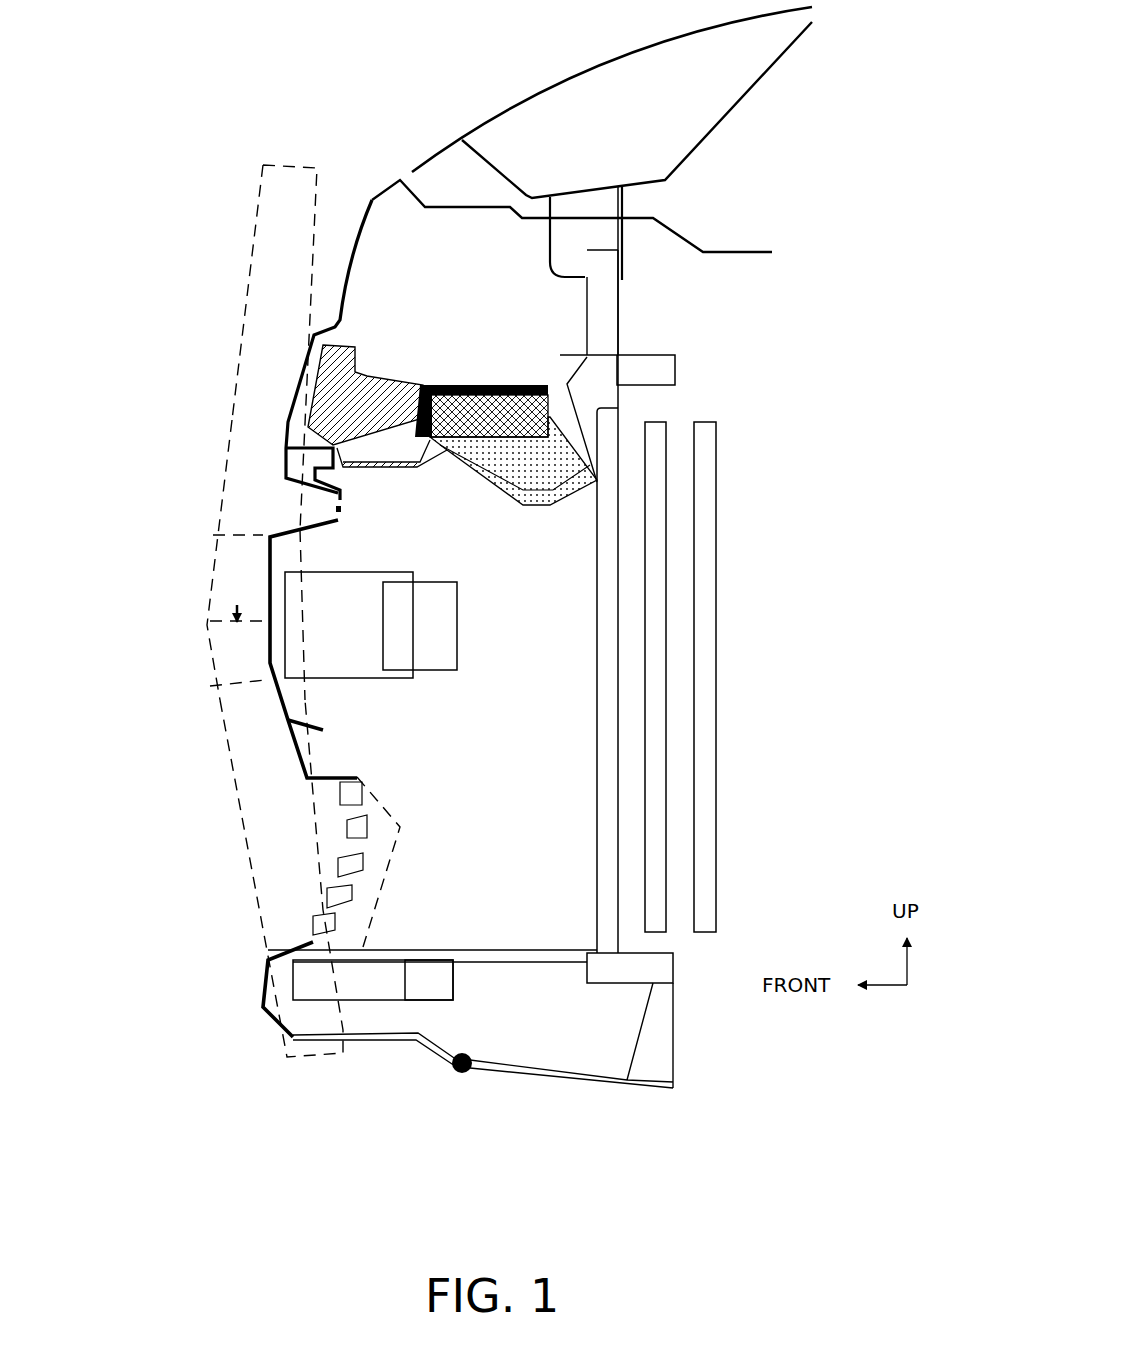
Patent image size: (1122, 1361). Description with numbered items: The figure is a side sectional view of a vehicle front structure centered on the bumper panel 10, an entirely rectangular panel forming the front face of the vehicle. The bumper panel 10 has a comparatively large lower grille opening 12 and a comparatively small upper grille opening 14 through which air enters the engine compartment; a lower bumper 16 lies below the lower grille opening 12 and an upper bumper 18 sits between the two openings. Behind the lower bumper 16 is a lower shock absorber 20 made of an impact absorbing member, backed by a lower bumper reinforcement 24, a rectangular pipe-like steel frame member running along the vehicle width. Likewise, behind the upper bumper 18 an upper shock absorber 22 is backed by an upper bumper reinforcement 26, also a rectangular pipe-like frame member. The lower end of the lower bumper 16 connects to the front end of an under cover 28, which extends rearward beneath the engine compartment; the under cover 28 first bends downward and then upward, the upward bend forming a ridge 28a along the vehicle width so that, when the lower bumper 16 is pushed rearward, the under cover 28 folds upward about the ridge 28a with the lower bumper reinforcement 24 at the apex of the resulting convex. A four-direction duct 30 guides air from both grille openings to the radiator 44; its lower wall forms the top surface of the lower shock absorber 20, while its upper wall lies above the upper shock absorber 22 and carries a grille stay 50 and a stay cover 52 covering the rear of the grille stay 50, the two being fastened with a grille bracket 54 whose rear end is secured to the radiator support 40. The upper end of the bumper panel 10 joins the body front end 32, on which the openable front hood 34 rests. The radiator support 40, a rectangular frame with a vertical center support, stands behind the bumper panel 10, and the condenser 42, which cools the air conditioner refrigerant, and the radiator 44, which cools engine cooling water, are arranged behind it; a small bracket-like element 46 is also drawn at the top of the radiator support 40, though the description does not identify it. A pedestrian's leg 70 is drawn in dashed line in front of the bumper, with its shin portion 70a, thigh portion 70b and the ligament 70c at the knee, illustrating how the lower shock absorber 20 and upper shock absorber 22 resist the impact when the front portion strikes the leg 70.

The bumper panel 10 is at (193, 428).
The lower grille opening 12 is at (355, 828).
The upper grille opening 14 is at (330, 492).
The lower bumper 16 is at (263, 997).
The upper bumper 18 is at (281, 660).
The lower shock absorber 20 is at (323, 987).
The upper shock absorber 22 is at (298, 605).
The lower bumper reinforcement 24 is at (442, 970).
The upper bumper reinforcement 26 is at (413, 632).
The under cover 28 is at (530, 1078).
The ridge 28a is at (463, 1073).
The four-direction duct 30 is at (390, 468).
The body front end 32 is at (467, 207).
The front hood 34 is at (592, 70).
The radiator support 40 is at (618, 672).
The condenser 42 is at (668, 570).
The radiator 44 is at (715, 482).
The upper bracket 46 is at (598, 407).
The grille stay 50 is at (388, 375).
The stay cover 52 is at (470, 383).
The grille bracket 54 is at (553, 483).
The leg 70 is at (183, 557).
The shin portion 70a is at (240, 778).
The thigh portion 70b is at (250, 262).
The ligament 70c is at (224, 621).